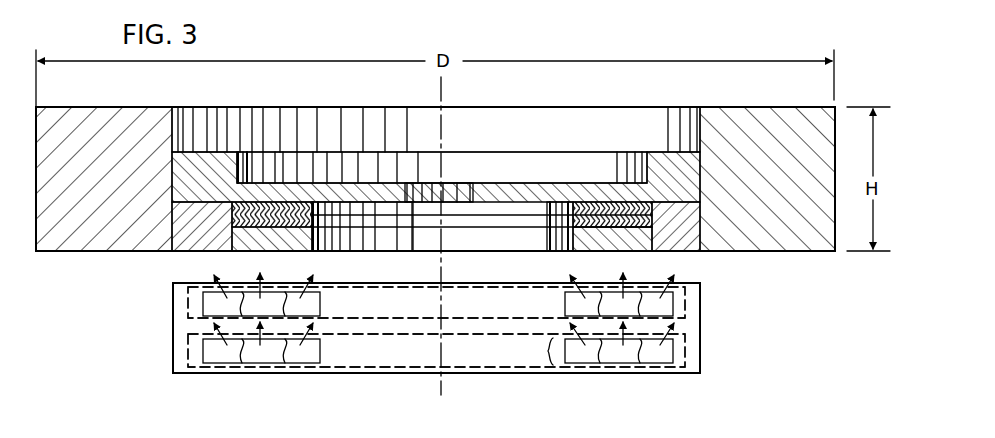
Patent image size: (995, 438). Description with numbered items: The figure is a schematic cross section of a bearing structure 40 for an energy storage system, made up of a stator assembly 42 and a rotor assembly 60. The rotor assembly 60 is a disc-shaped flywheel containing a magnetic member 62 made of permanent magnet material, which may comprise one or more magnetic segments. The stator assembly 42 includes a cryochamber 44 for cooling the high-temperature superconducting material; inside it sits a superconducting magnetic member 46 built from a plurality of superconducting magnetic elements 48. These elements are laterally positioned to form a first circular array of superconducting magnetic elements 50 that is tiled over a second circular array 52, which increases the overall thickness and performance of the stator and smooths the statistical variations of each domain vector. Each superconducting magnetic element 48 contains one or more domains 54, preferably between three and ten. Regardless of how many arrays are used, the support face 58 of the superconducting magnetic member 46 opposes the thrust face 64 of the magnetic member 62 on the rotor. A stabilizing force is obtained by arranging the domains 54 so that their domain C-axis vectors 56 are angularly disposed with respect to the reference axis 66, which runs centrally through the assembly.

The bearing structure 40 is at (852, 70).
The stator assembly 42 is at (173, 341).
The cryochamber 44 is at (700, 374).
The superconducting magnetic member 46 is at (719, 286).
The superconducting magnetic elements 48 is at (543, 355).
The first circular array of superconducting magnetic elements 50 is at (188, 305).
The second circular array of superconducting magnetic elements 52 is at (190, 351).
The domains 54 is at (612, 362).
The domain C-axis vectors 56 is at (624, 273).
The support face 58 is at (212, 281).
The rotor assembly 60 is at (73, 382).
The magnetic member 62 is at (293, 210).
The thrust face 64 is at (240, 250).
The reference axis 66 is at (442, 96).